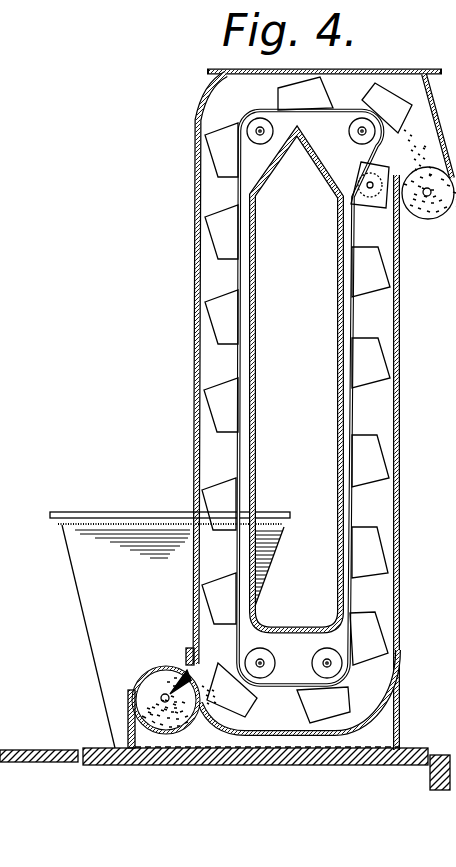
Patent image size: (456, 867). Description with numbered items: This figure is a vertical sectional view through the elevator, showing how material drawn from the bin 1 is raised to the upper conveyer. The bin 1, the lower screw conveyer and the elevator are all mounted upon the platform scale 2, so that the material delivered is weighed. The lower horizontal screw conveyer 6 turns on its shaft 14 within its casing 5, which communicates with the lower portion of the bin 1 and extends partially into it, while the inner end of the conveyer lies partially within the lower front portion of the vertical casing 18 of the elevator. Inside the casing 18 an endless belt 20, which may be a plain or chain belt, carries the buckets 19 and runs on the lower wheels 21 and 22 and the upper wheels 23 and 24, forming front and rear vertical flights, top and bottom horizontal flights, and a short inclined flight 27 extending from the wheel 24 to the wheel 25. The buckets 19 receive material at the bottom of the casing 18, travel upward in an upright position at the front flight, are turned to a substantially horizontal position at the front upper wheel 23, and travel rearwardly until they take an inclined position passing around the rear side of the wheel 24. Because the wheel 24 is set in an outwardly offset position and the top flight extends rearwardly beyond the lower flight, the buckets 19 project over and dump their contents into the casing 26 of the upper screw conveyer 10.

The bin 1 is at (72, 568).
The platform scale 2 is at (282, 763).
The casing 5 is at (143, 678).
The lower horizontal screw conveyer 6 is at (150, 685).
The upper screw conveyer 10 is at (431, 222).
The shaft 14 is at (160, 700).
The vertical casing 18 is at (193, 375).
The buckets 19 is at (215, 223).
The endless belt 20 is at (357, 414).
The lower wheel 21 is at (248, 653).
The lower wheel 22 is at (340, 655).
The front upper wheel 23 is at (243, 121).
The upper wheel 24 is at (350, 137).
The wheel 25 is at (363, 197).
The casing 26 is at (442, 222).
The short inclined flight 27 is at (367, 150).